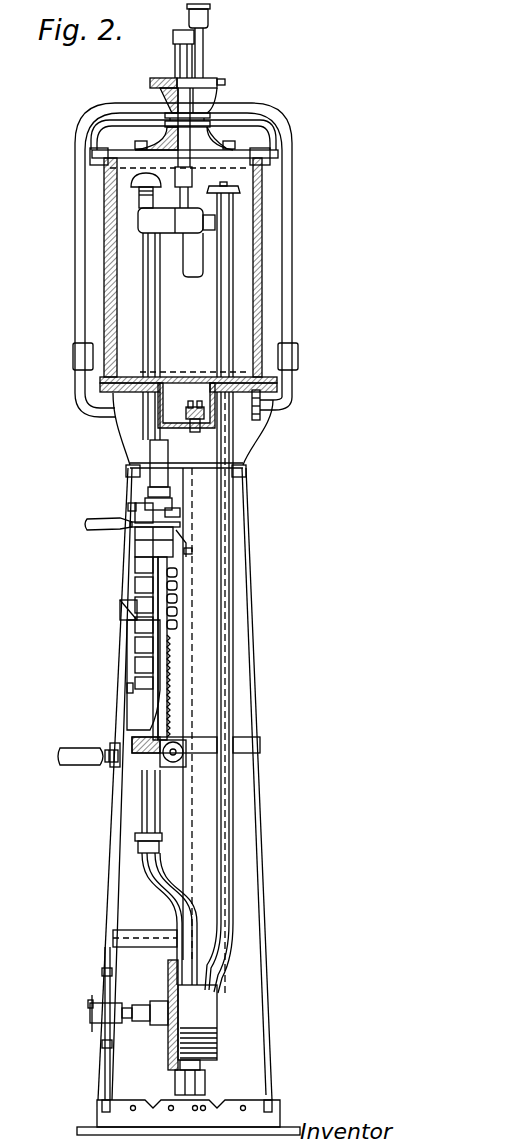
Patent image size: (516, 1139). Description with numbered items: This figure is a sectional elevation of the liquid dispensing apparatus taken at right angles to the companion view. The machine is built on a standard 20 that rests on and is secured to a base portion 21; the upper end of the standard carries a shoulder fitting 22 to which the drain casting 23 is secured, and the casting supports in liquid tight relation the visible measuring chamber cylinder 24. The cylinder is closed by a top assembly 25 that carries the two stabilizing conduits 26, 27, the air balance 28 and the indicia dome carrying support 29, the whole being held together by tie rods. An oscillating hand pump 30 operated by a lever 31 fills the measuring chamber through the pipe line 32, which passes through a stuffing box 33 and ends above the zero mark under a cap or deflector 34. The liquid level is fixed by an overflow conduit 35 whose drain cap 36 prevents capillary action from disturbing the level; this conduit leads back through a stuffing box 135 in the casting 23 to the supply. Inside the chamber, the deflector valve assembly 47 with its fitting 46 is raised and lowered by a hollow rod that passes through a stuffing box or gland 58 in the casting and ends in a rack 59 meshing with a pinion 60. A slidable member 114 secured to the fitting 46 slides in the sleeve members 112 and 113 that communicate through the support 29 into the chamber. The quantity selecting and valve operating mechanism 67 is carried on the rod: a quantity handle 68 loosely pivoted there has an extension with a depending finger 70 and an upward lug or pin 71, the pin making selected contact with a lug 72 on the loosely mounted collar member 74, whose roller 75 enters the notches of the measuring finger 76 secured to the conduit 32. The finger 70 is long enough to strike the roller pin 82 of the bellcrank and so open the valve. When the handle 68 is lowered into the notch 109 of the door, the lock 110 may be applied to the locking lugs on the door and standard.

The standard 20 is at (262, 861).
The base portion 21 is at (98, 1111).
The shoulder fitting 22 is at (262, 440).
The drain casting 23 is at (170, 430).
The measuring chamber cylinder 24 is at (262, 305).
The top assembly 25 is at (216, 141).
The stabilizing conduit 26 is at (82, 224).
The stabilizing conduit 27 is at (290, 208).
The air balance 28 is at (203, 54).
The indicia dome carrying support 29 is at (226, 89).
The oscillating hand pump 30 is at (218, 1030).
The lever 31 is at (110, 901).
The pipe line 32 is at (148, 863).
The stuffing box 33 is at (147, 388).
The cap or deflector 34 is at (131, 181).
The overflow conduit 35 is at (232, 254).
The drain cap 36 is at (238, 187).
The fitting 46 is at (181, 231).
The deflector valve assembly 47 is at (143, 226).
The stuffing box or gland 58 is at (158, 466).
The rack 59 is at (168, 688).
The pinion 60 is at (184, 769).
The quantity selecting and valve operating mechanism 67 is at (135, 536).
The quantity handle 68 is at (97, 518).
The depending finger 70 is at (170, 566).
The lug or pin 71 is at (172, 503).
The lug 72 is at (135, 513).
The collar member 74 is at (134, 507).
The roller 75 is at (181, 513).
The measuring finger 76 is at (178, 594).
The roller pin 82 is at (189, 553).
The notch 109 is at (128, 691).
The lock 110 is at (121, 613).
The sleeve member 112 is at (176, 69).
The sleeve member 113 is at (160, 134).
The slidable member 114 is at (176, 190).
The stuffing box 135 is at (262, 403).